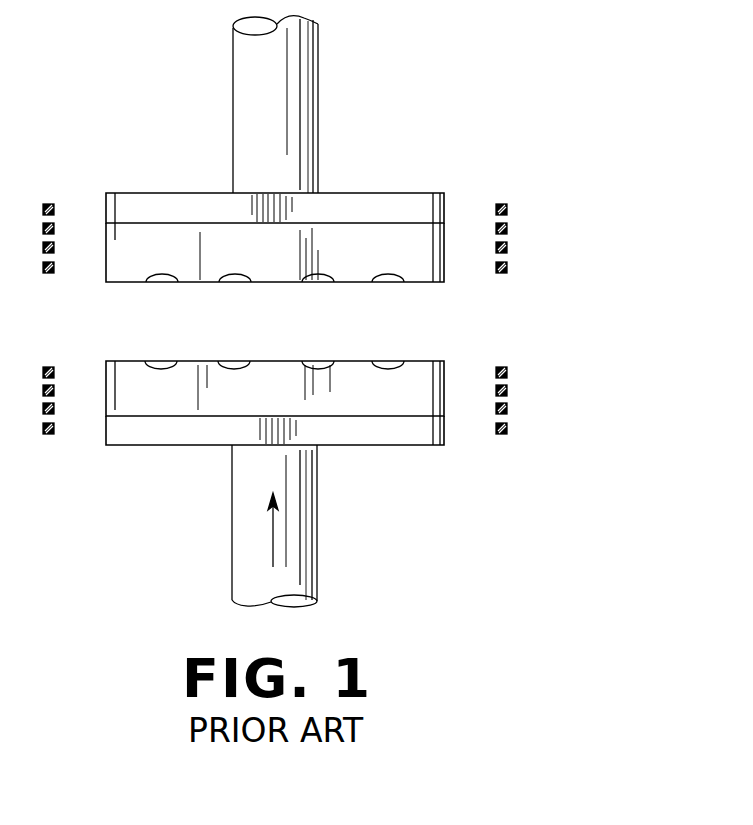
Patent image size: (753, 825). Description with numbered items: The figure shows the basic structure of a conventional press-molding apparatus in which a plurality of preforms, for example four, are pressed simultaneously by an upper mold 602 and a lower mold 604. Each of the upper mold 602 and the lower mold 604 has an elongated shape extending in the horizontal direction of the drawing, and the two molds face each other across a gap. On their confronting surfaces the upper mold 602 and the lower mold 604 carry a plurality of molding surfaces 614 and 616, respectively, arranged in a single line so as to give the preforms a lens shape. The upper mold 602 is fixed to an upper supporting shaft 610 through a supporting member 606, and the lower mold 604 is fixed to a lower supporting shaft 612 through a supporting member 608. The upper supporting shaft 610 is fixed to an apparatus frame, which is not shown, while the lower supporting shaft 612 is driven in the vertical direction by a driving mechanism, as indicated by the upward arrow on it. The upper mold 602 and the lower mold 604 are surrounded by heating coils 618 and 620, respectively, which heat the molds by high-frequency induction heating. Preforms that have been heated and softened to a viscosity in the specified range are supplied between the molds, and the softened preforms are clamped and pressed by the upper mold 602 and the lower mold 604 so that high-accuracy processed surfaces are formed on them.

The upper mold 602 is at (421, 283).
The lower mold 604 is at (426, 361).
The supporting member 606 is at (400, 193).
The supporting member 608 is at (392, 446).
The upper supporting shaft 610 is at (318, 70).
The lower supporting shaft 612 is at (300, 540).
The molding surfaces 614 is at (233, 283).
The molding surfaces 616 is at (235, 362).
The heating coil 618 is at (507, 209).
The heating coil 620 is at (508, 390).